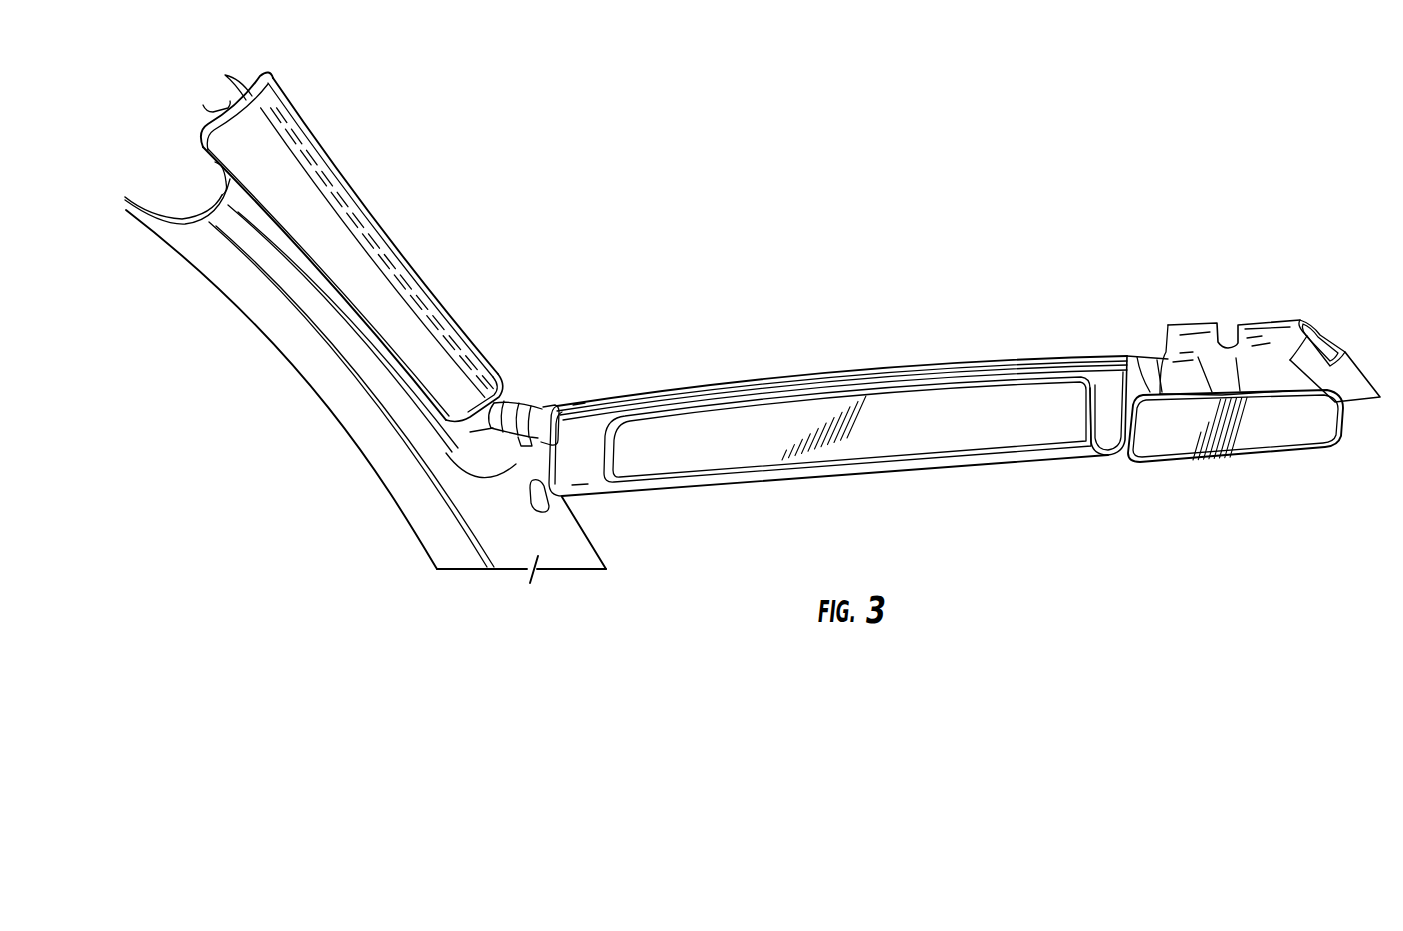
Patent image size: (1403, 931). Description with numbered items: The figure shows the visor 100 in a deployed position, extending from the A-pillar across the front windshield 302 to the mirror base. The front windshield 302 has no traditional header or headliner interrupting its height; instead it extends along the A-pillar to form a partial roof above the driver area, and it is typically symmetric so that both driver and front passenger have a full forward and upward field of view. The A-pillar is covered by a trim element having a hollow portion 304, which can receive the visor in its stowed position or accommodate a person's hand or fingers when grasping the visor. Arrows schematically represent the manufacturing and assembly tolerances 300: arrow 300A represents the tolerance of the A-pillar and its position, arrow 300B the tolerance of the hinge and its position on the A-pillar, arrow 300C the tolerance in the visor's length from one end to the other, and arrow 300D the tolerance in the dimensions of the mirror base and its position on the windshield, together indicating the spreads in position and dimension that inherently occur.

The visor 100 is at (935, 189).
The manufacturing and assembly tolerances 300 is at (716, 266).
The arrow 300A is at (548, 364).
The arrow 300B is at (548, 364).
The arrow 300C is at (595, 361).
The arrow 300D is at (1178, 316).
The front windshield 302 is at (620, 179).
The hollow portion 304 is at (360, 242).